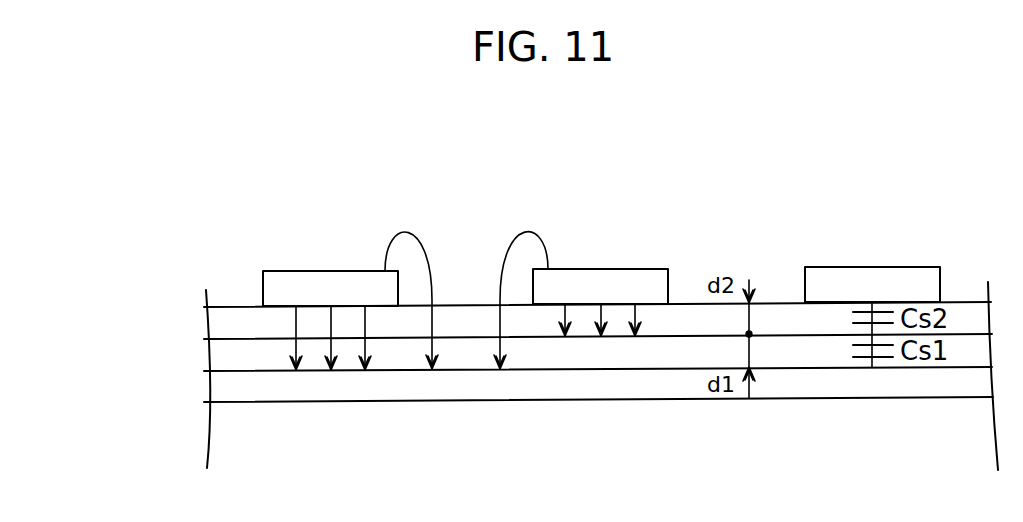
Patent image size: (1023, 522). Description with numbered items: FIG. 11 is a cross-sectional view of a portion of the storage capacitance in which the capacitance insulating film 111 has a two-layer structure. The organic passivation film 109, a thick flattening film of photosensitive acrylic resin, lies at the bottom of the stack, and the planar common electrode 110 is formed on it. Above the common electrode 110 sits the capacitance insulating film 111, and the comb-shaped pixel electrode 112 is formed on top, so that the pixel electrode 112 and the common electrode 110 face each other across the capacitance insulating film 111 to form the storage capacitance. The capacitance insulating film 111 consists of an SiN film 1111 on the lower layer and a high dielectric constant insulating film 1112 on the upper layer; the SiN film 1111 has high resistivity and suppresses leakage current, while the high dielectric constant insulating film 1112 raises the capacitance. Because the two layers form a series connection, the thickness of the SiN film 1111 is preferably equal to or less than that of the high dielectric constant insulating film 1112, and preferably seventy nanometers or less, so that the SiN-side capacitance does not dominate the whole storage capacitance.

The organic passivation film 109 is at (240, 438).
The common electrode 110 is at (226, 388).
The capacitance insulating film 111 is at (510, 339).
The SiN film 1111 is at (222, 356).
The high dielectric constant insulating film 1112 is at (222, 323).
The pixel electrode 112 is at (300, 268).